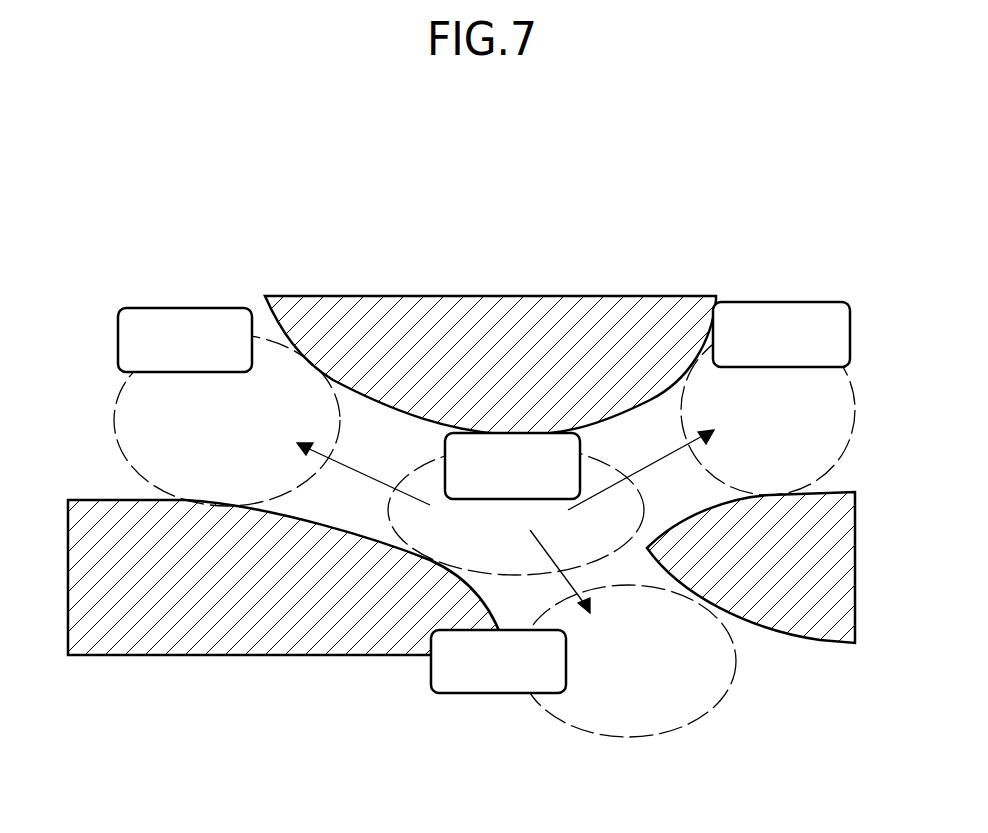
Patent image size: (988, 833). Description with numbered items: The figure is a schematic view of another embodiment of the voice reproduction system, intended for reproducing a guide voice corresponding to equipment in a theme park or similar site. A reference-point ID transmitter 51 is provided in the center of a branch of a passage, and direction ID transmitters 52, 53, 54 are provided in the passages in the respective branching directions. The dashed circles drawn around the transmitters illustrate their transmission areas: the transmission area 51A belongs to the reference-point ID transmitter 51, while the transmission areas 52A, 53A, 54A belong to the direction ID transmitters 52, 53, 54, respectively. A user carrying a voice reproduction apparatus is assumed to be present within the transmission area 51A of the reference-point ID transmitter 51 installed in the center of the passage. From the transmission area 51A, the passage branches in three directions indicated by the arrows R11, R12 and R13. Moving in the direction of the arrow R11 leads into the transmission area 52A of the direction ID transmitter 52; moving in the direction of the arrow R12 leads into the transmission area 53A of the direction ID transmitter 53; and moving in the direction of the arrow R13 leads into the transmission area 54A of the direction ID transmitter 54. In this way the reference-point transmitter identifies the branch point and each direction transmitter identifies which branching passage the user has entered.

The reference-point ID transmitter 51 is at (444, 468).
The transmission area 51A is at (618, 458).
The direction ID transmitter 52 is at (172, 307).
The transmission area 52A is at (118, 400).
The direction ID transmitter 53 is at (448, 694).
The transmission area 53A is at (731, 687).
The direction ID transmitter 54 is at (792, 302).
The transmission area 54A is at (856, 395).
The arrow R11 is at (363, 474).
The arrow R12 is at (557, 571).
The arrow R13 is at (641, 470).